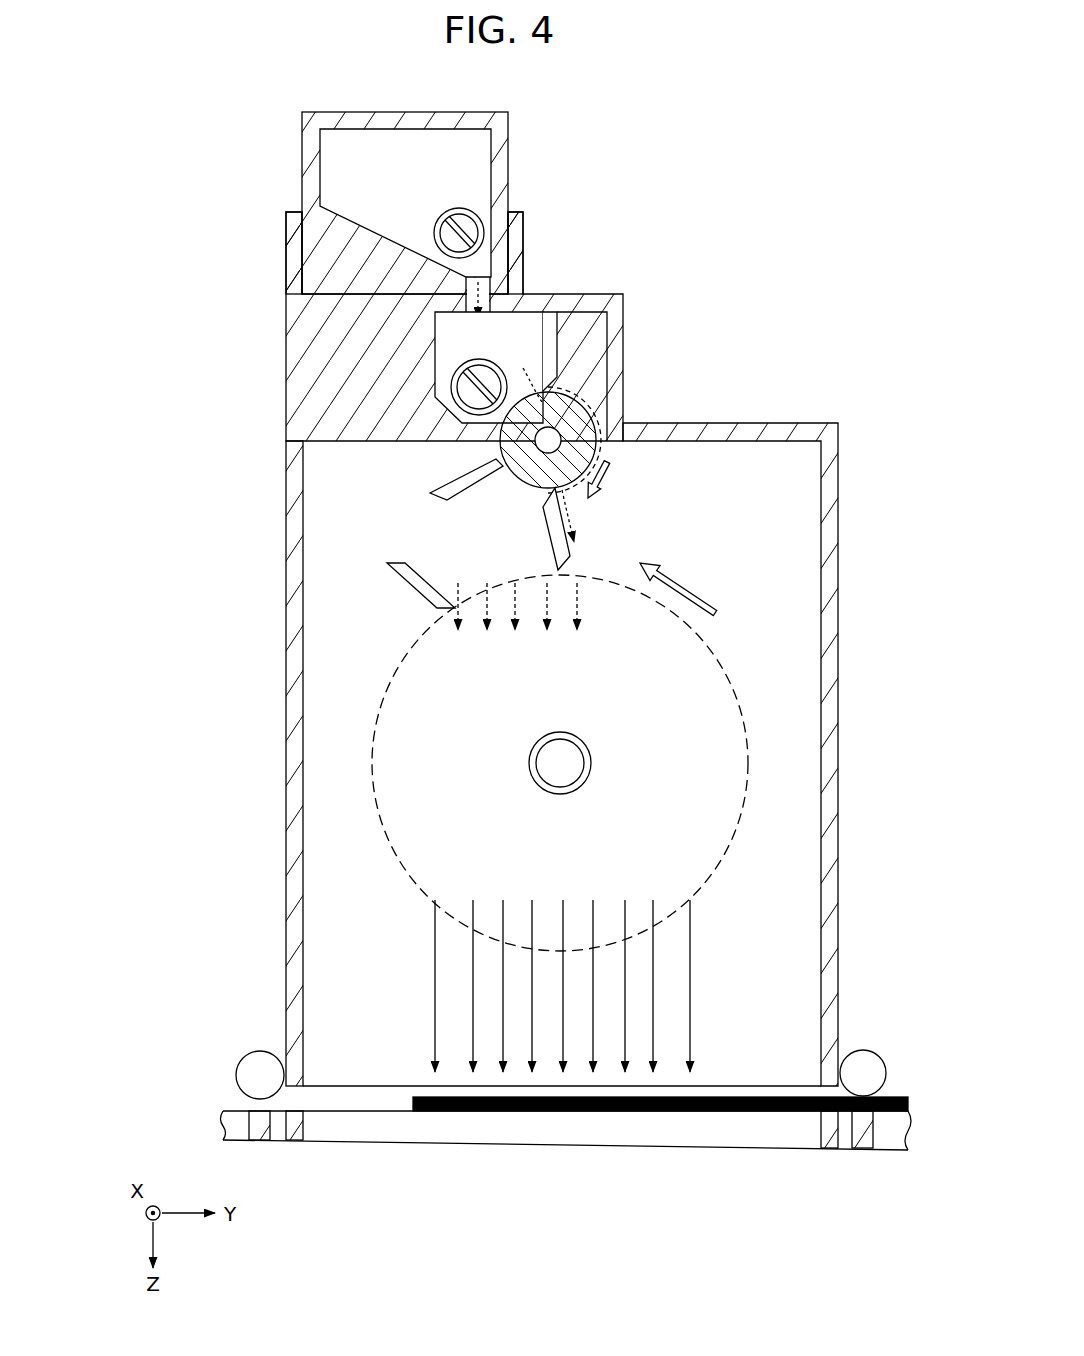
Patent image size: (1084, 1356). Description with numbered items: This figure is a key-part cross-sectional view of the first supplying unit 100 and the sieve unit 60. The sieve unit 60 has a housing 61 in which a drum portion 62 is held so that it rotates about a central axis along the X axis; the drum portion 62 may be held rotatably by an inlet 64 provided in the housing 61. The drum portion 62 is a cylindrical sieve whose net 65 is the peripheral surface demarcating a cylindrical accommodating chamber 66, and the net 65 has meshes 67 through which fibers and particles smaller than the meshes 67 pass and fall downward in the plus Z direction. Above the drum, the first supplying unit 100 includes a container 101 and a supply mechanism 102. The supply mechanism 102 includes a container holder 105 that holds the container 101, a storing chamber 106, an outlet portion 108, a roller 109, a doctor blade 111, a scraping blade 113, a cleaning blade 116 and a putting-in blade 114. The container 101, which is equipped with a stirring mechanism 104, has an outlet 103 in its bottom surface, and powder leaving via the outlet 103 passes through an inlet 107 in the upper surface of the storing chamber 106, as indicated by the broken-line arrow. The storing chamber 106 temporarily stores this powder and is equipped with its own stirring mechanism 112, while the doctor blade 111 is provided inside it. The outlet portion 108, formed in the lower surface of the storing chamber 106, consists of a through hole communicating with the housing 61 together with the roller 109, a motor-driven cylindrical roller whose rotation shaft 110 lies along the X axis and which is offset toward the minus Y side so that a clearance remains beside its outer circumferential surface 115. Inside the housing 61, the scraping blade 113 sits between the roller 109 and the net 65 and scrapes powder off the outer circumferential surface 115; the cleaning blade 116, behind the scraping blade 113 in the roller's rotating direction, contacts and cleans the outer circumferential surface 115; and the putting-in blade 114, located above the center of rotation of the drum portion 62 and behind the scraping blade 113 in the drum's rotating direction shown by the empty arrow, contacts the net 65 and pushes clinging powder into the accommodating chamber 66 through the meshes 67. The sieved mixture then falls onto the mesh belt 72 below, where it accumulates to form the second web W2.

The first supplying unit 100 is at (102, 300).
The container 101 is at (510, 124).
The supply mechanism 102 is at (195, 349).
The outlet 103 is at (488, 288).
The stirring mechanism 104 is at (470, 230).
The container holder 105 is at (303, 230).
The storing chamber 106 is at (453, 340).
The inlet 107 is at (475, 322).
The outlet portion 108 is at (607, 443).
The roller 109 is at (473, 520).
The rotation shaft 110 is at (538, 438).
The doctor blade 111 is at (558, 348).
The stirring mechanism 112 is at (452, 383).
The scraping blade 113 is at (550, 553).
The putting-in blade 114 is at (398, 562).
The outer circumferential surface 115 is at (538, 487).
The cleaning blade 116 is at (495, 470).
The sieve unit 60 is at (262, 572).
The housing 61 is at (306, 488).
The drum portion 62 is at (757, 603).
The inlet 64 is at (592, 740).
The net 65 is at (357, 607).
The accommodating chamber 66 is at (702, 677).
The meshes 67 is at (405, 664).
The mesh belt 72 is at (388, 1112).
The second web W2 is at (893, 1097).